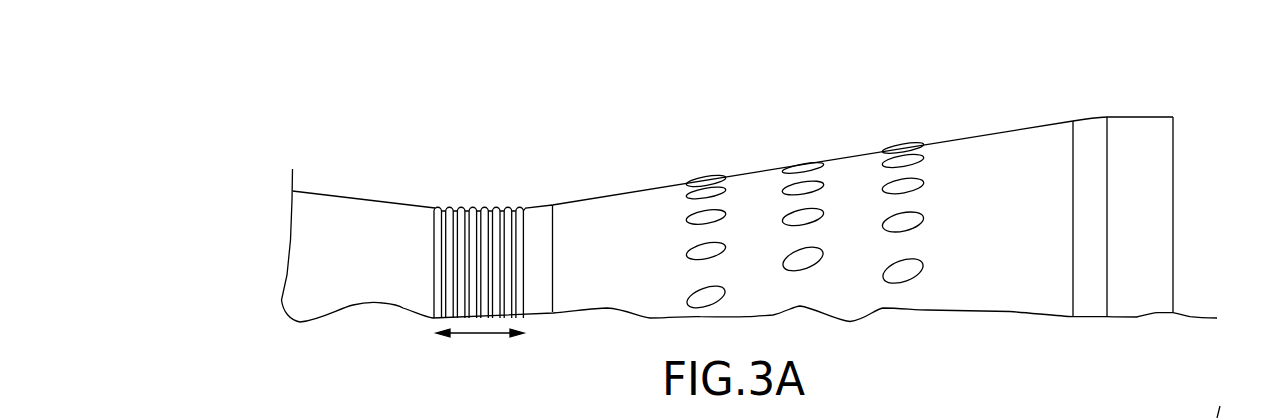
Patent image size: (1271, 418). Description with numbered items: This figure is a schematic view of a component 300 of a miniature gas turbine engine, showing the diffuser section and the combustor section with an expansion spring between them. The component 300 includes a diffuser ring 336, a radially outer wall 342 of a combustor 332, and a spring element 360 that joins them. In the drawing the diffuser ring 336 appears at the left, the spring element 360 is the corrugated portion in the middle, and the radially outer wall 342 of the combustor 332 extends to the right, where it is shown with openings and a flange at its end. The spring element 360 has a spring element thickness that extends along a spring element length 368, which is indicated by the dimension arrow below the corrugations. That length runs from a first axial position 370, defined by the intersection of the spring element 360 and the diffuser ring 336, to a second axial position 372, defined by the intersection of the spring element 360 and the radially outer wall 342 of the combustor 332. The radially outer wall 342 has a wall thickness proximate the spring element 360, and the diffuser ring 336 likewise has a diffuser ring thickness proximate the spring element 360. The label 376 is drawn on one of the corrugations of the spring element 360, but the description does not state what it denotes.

The component 300 is at (203, 128).
The combustor 332 is at (980, 133).
The diffuser ring 336 is at (362, 200).
The radially outer wall 342 is at (760, 170).
The spring element 360 is at (490, 209).
The spring element length 368 is at (470, 335).
The first axial position 370 is at (436, 209).
The second axial position 372 is at (523, 209).
The second corrugation 376 is at (456, 209).